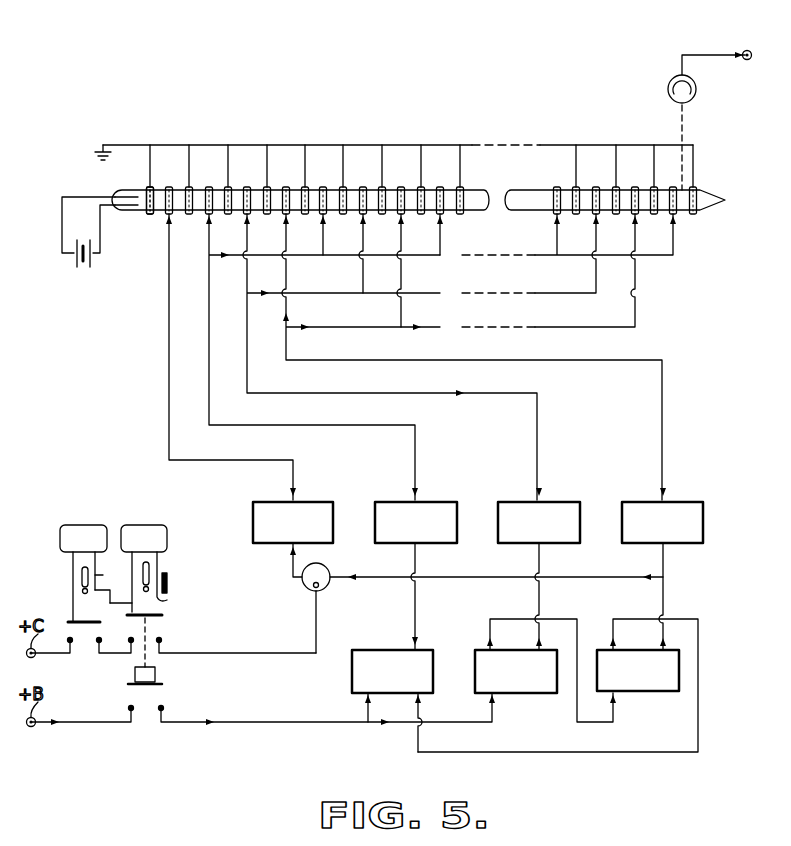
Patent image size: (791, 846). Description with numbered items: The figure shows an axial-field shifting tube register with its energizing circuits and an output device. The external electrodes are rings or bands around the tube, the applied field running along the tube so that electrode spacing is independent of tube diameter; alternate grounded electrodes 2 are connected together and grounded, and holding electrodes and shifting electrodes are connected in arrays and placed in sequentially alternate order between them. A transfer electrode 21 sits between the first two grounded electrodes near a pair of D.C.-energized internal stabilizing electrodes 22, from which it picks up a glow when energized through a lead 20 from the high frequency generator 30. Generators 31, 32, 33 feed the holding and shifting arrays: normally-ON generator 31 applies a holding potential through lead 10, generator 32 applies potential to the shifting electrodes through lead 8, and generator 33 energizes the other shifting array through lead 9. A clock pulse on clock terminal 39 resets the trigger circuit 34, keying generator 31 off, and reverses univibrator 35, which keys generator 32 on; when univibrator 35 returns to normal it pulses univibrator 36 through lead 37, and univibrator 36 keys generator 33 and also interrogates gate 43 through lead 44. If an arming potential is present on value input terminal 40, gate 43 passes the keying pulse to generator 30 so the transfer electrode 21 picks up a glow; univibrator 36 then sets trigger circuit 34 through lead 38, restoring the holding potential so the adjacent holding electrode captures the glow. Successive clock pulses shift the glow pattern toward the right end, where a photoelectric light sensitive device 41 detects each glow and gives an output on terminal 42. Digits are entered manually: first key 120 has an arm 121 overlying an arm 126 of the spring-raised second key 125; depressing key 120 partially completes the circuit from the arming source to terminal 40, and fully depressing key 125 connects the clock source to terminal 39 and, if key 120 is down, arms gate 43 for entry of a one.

The grounded electrodes 2 is at (187, 186).
The lead 8 is at (539, 478).
The lead 9 is at (663, 478).
The lead 10 is at (415, 478).
The lead 20 is at (293, 478).
The transfer electrode 21 is at (152, 216).
The internal stabilizing electrodes 22 is at (110, 205).
The high frequency generator 30 is at (333, 532).
The high frequency generator 31 is at (457, 532).
The high frequency generator 32 is at (580, 532).
The high frequency generator 33 is at (703, 532).
The trigger circuit 34 is at (433, 672).
The univibrator 35 is at (536, 693).
The univibrator 36 is at (660, 691).
The lead 37 is at (600, 722).
The lead 38 is at (620, 752).
The clock terminal 39 is at (163, 710).
The value input terminal 40 is at (162, 642).
The light sensitive device 41 is at (668, 89).
The output terminal 42 is at (748, 50).
The gate 43 is at (326, 568).
The lead 44 is at (470, 577).
The first key 120 is at (73, 525).
The arm 121 is at (110, 590).
The second key 125 is at (148, 525).
The arm 126 is at (120, 603).